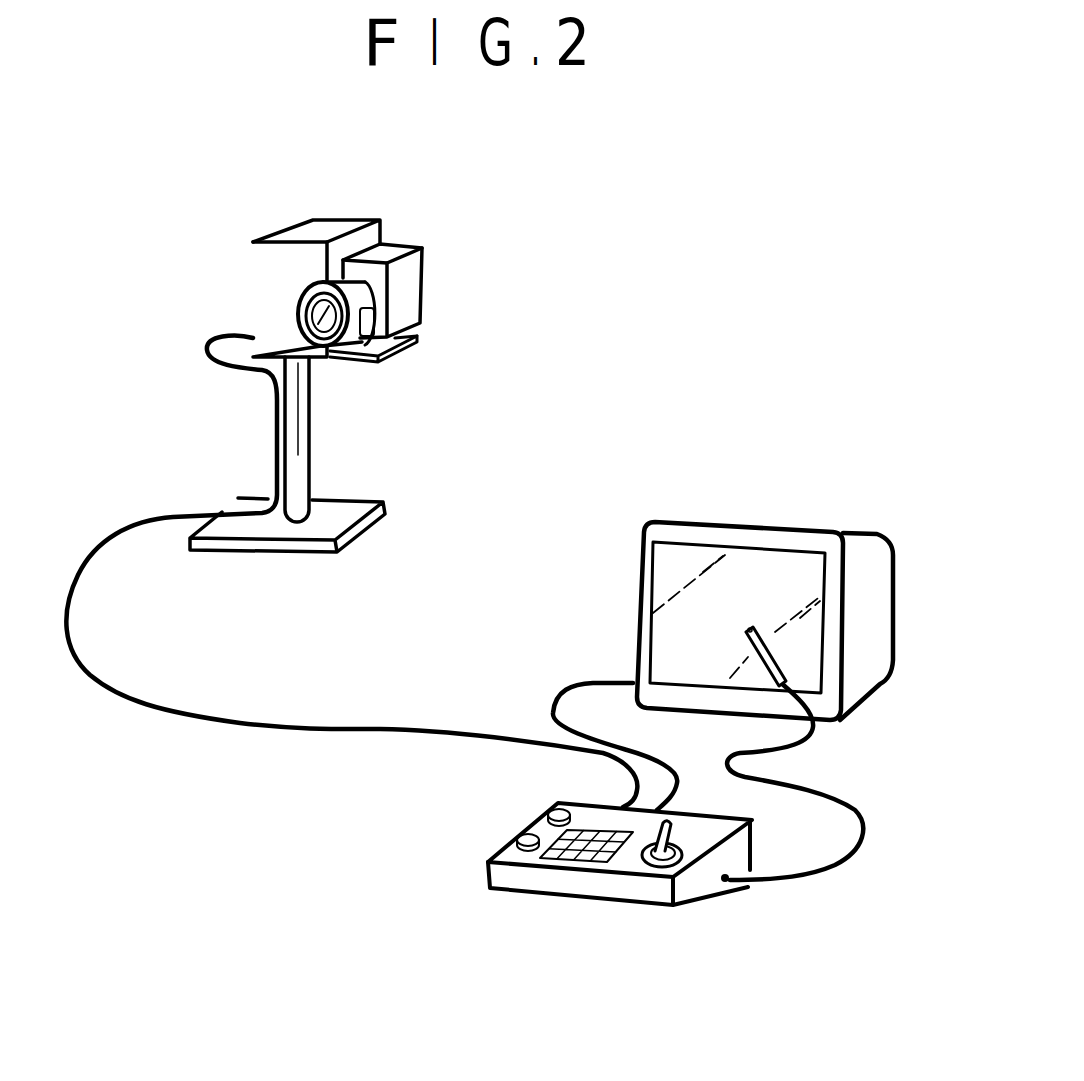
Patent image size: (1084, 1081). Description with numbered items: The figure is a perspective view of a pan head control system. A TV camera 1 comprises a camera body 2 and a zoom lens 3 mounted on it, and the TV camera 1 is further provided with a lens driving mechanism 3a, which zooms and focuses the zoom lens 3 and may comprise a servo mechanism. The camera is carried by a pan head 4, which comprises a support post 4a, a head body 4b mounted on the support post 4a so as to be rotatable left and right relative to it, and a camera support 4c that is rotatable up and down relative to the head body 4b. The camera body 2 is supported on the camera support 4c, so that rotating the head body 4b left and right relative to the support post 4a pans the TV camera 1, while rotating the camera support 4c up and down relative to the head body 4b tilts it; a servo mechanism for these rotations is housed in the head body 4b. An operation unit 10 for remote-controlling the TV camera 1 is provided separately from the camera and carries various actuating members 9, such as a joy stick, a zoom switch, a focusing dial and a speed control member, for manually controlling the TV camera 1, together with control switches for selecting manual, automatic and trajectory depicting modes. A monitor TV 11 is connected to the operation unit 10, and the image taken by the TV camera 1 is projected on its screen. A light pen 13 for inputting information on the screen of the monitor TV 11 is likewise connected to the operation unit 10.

The TV camera 1 is at (432, 236).
The camera body 2 is at (418, 288).
The zoom lens 3 is at (347, 263).
The lens driving mechanism 3a is at (408, 343).
The pan head 4 is at (285, 212).
The support post 4a is at (297, 427).
The head body 4b is at (267, 280).
The camera support 4c is at (370, 360).
The actuating members 9 is at (517, 835).
The operation unit 10 is at (718, 905).
The monitor TV 11 is at (782, 530).
The light pen 13 is at (765, 652).